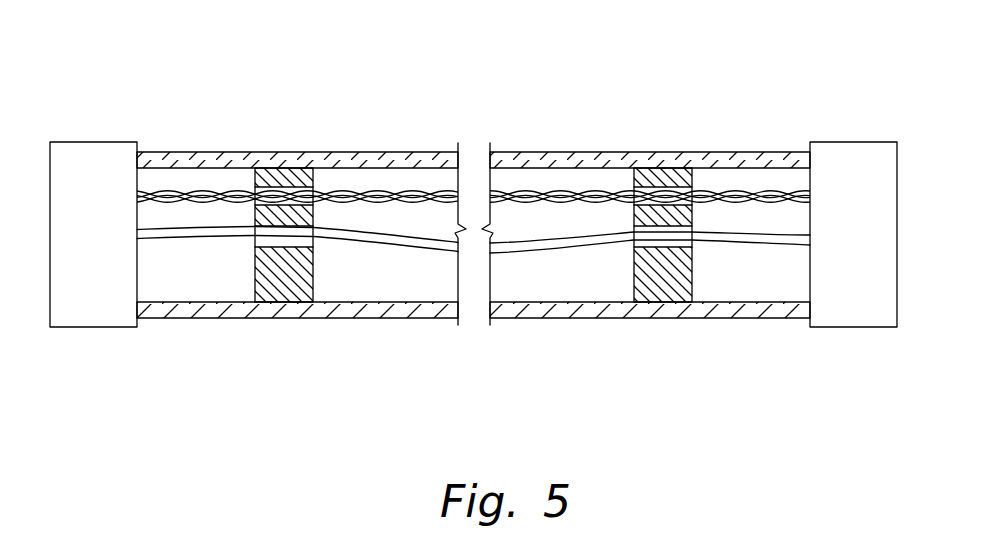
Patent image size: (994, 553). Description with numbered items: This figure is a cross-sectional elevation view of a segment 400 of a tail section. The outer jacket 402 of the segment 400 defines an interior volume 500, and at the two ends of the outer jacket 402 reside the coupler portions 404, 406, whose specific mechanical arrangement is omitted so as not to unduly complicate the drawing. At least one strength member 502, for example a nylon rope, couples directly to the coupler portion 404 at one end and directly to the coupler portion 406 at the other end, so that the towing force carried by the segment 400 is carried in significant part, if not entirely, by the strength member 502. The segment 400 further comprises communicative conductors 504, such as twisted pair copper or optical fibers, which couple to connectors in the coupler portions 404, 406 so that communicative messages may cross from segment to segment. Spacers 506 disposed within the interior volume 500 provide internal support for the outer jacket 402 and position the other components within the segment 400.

The segment 400 is at (686, 46).
The outer jacket 402 is at (540, 152).
The coupler portion 404 is at (93, 142).
The coupler portion 406 is at (854, 142).
The interior volume 500 is at (390, 180).
The strength member 502 is at (395, 250).
The communicative conductors 504 is at (192, 188).
The spacers 506 is at (283, 288).